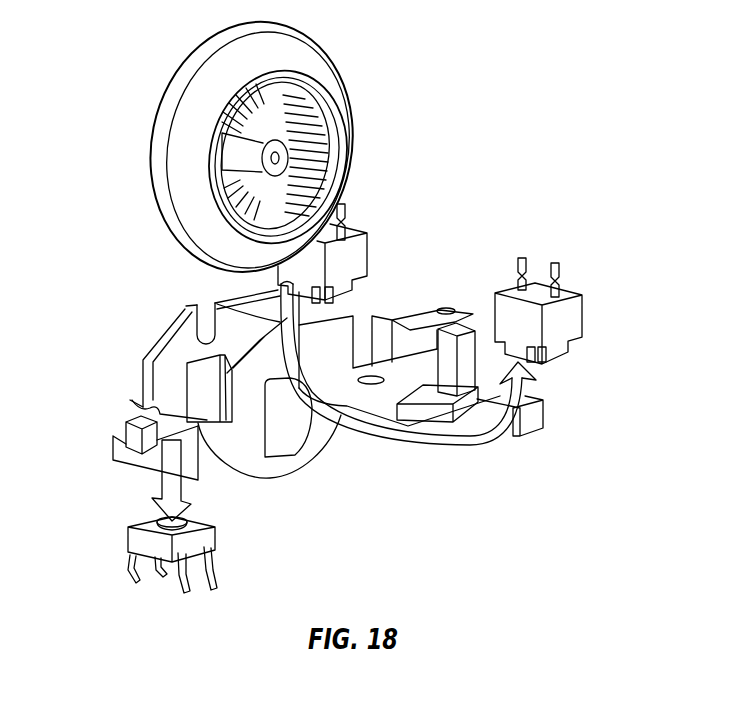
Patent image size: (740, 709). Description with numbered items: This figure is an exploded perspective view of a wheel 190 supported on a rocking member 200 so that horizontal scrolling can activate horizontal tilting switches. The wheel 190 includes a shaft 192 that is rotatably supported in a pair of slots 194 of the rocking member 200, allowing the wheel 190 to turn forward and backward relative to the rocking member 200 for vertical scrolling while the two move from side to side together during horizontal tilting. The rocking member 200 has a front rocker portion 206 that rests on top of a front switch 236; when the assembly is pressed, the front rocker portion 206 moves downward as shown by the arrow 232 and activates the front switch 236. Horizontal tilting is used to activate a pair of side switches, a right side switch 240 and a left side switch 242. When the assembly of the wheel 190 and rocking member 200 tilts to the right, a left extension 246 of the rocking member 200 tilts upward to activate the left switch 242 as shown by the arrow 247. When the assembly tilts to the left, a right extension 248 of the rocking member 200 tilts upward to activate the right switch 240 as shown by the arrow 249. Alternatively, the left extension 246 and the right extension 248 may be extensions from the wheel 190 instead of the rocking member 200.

The wheel 190 is at (238, 146).
The shaft 192 is at (245, 152).
The slots 194 is at (203, 314).
The rocking member 200 is at (201, 408).
The front rocker portion 206 is at (131, 430).
The arrow 232 is at (167, 495).
The front switch 236 is at (137, 541).
The right side switch 240 is at (357, 262).
The left side switch 242 is at (572, 320).
The left extension 246 is at (350, 315).
The arrow 247 is at (517, 397).
The right extension 248 is at (282, 310).
The arrow 249 is at (279, 290).